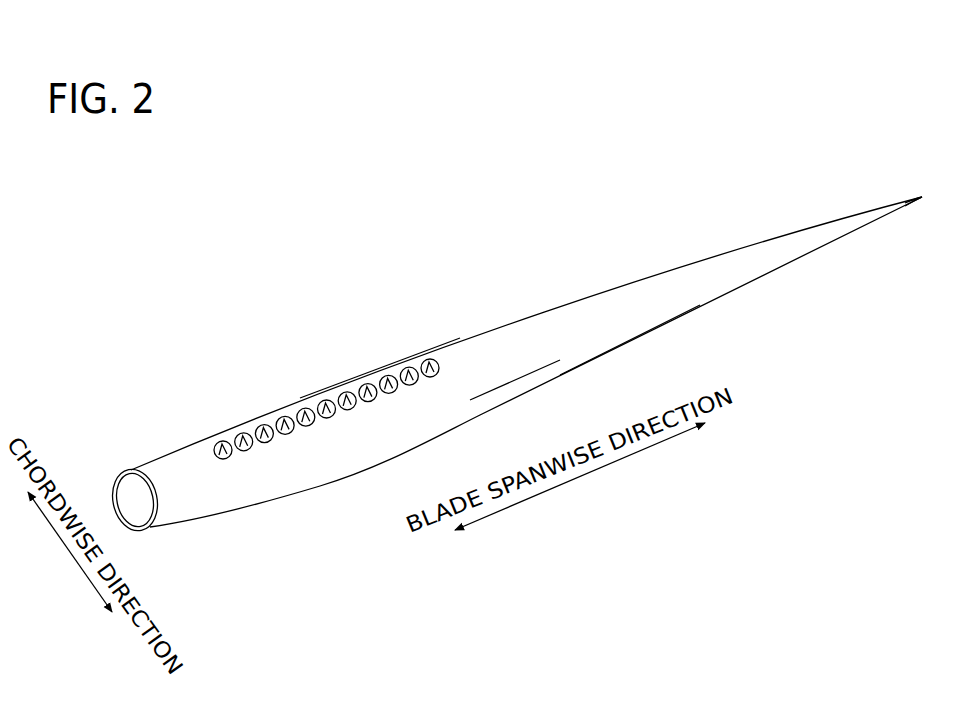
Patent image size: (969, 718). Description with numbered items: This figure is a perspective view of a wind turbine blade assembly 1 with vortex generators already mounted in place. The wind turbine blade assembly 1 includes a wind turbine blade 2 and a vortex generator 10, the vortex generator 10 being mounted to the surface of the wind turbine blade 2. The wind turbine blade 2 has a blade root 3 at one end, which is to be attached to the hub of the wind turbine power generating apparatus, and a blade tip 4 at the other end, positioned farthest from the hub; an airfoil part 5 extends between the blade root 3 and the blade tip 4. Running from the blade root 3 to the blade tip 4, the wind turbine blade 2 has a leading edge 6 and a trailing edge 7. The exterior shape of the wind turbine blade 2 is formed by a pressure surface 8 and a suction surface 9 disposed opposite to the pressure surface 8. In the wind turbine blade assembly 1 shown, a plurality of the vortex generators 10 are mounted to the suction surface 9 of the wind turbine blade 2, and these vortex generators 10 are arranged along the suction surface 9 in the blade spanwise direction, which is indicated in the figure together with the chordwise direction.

The wind turbine blade assembly 1 is at (517, 332).
The wind turbine blade 2 is at (517, 332).
The blade root 3 is at (113, 473).
The blade tip 4 is at (921, 196).
The airfoil part 5 is at (336, 388).
The leading edge 6 is at (494, 327).
The trailing edge 7 is at (548, 378).
The pressure surface 8 is at (598, 337).
The suction surface 9 is at (520, 368).
The vortex generator 10 is at (388, 375).